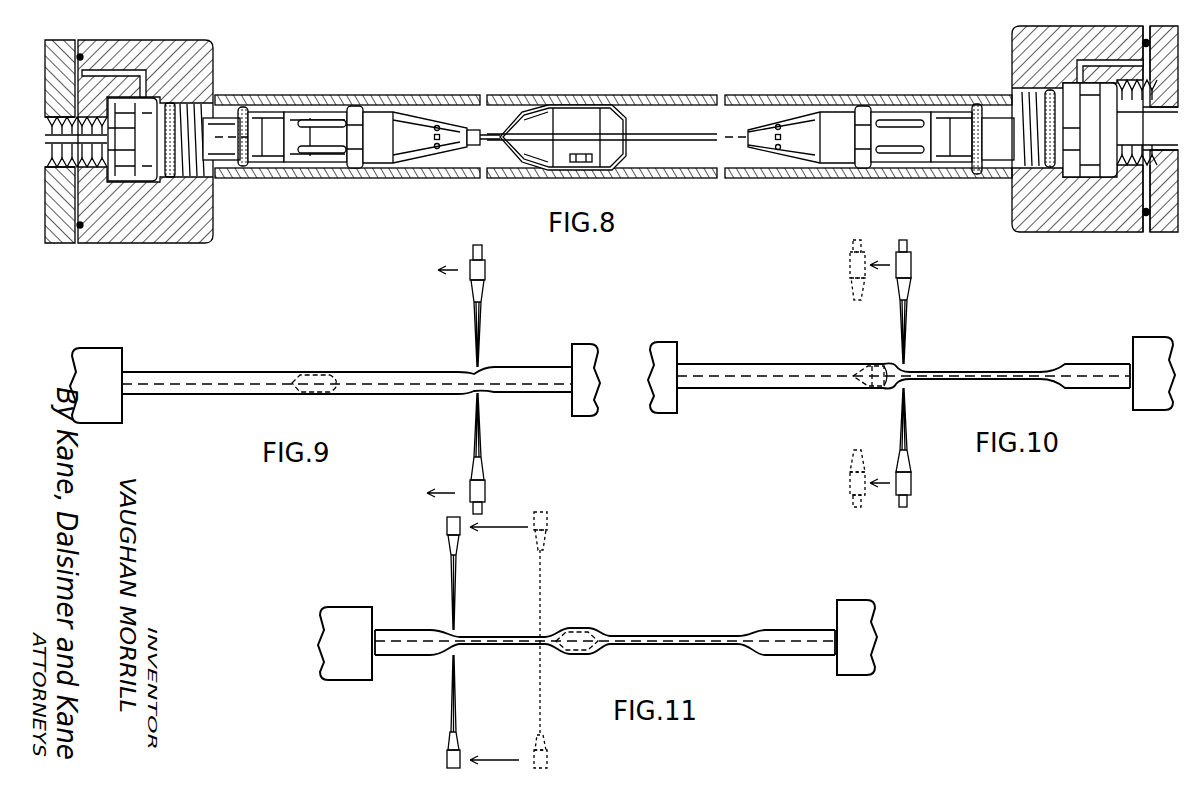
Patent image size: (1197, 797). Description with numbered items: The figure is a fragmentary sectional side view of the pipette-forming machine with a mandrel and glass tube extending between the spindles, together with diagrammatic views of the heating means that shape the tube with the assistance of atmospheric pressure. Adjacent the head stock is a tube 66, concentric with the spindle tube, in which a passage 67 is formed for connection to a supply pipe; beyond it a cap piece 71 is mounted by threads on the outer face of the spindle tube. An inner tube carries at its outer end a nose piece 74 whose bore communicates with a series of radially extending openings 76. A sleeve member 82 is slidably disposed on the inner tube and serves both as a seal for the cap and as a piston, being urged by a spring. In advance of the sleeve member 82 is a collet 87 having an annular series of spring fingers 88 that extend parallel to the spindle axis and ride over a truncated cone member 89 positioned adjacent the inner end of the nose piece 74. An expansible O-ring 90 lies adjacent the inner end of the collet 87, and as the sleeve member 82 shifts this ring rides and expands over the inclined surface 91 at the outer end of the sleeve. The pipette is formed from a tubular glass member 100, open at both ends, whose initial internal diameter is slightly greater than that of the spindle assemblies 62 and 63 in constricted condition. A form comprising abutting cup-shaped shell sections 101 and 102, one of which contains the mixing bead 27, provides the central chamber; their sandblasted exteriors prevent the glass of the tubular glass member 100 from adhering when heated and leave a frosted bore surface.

In FIG. 8, the mixing bead 27 is at (608, 163).
In FIG. 9, the spindle assembly 62 is at (124, 374).
In FIG. 10, the spindle assembly 62 is at (680, 366).
In FIG. 11, the spindle assembly 62 is at (378, 633).
In FIG. 9, the spindle assembly 63 is at (575, 372).
In FIG. 10, the spindle assembly 63 is at (1135, 373).
In FIG. 11, the spindle assembly 63 is at (830, 657).
In FIG. 8, the tube 66 is at (82, 243).
In FIG. 8, the passage 67 is at (115, 70).
In FIG. 8, the cap piece 71 is at (216, 42).
In FIG. 8, the nose piece 74 is at (455, 125).
In FIG. 8, the radially extending openings 76 is at (437, 122).
In FIG. 8, the sleeve member 82 is at (228, 150).
In FIG. 8, the collet 87 is at (276, 160).
In FIG. 8, the spring fingers 88 is at (316, 112).
In FIG. 8, the truncated cone member 89 is at (350, 100).
In FIG. 8, the expansible O-ring 90 is at (256, 113).
In FIG. 8, the inclined surface 91 is at (240, 106).
In FIG. 8, the tubular glass member 100 is at (845, 94).
In FIG. 9, the tubular glass member 100 is at (186, 379).
In FIG. 10, the tubular glass member 100 is at (785, 392).
In FIG. 11, the tubular glass member 100 is at (790, 630).
In FIG. 8, the shell section 101 is at (518, 113).
In FIG. 8, the shell section 102 is at (592, 104).
In FIG. 9, the shell section 102 is at (350, 364).
In FIG. 10, the shell section 102 is at (890, 364).
In FIG. 11, the shell section 102 is at (604, 622).